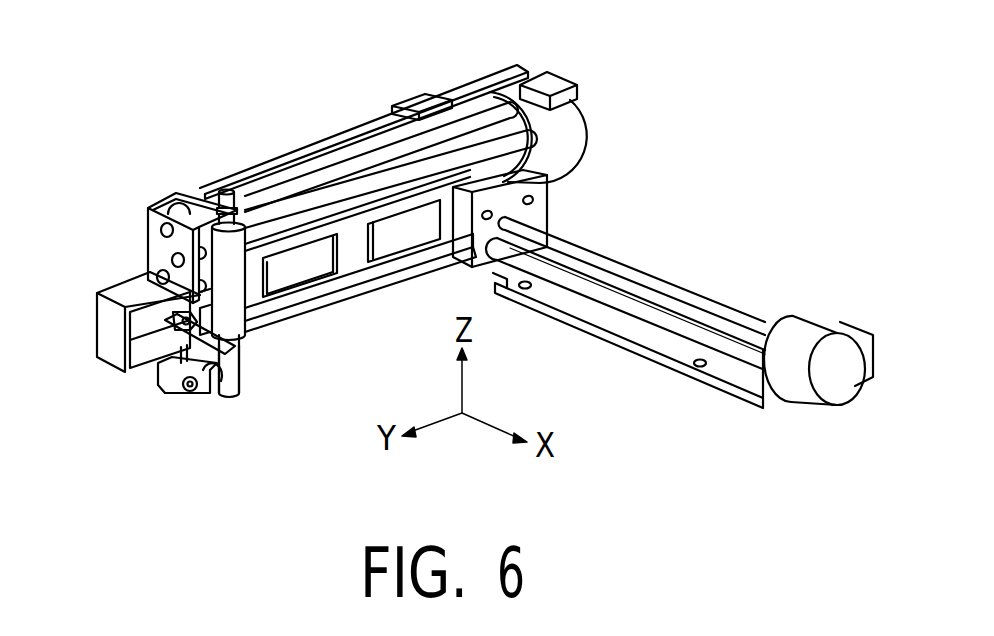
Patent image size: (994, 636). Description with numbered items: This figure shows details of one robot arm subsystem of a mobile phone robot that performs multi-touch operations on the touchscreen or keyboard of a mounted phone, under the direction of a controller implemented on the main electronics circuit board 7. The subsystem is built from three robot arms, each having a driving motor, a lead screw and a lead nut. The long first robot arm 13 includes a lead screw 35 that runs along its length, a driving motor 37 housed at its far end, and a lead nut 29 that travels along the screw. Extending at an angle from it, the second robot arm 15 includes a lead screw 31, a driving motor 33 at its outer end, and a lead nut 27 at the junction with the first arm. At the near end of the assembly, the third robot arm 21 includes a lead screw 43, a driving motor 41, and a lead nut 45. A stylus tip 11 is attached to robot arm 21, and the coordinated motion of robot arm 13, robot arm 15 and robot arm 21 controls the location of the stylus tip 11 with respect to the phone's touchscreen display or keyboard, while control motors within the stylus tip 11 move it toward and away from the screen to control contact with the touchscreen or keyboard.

The main electronics circuit board 7 is at (160, 205).
The stylus tip 11 is at (247, 373).
The robot arm 13 is at (368, 180).
The robot arm 15 is at (642, 294).
The robot arm 21 is at (206, 388).
The lead nut 27 is at (552, 193).
The lead nut 29 is at (262, 205).
The lead screw 31 is at (713, 295).
The driving motor 33 is at (798, 316).
The lead screw 35 is at (288, 178).
The driving motor 37 is at (587, 110).
The driving motor 41 is at (173, 388).
The lead screw 43 is at (125, 362).
The lead nut 45 is at (100, 360).